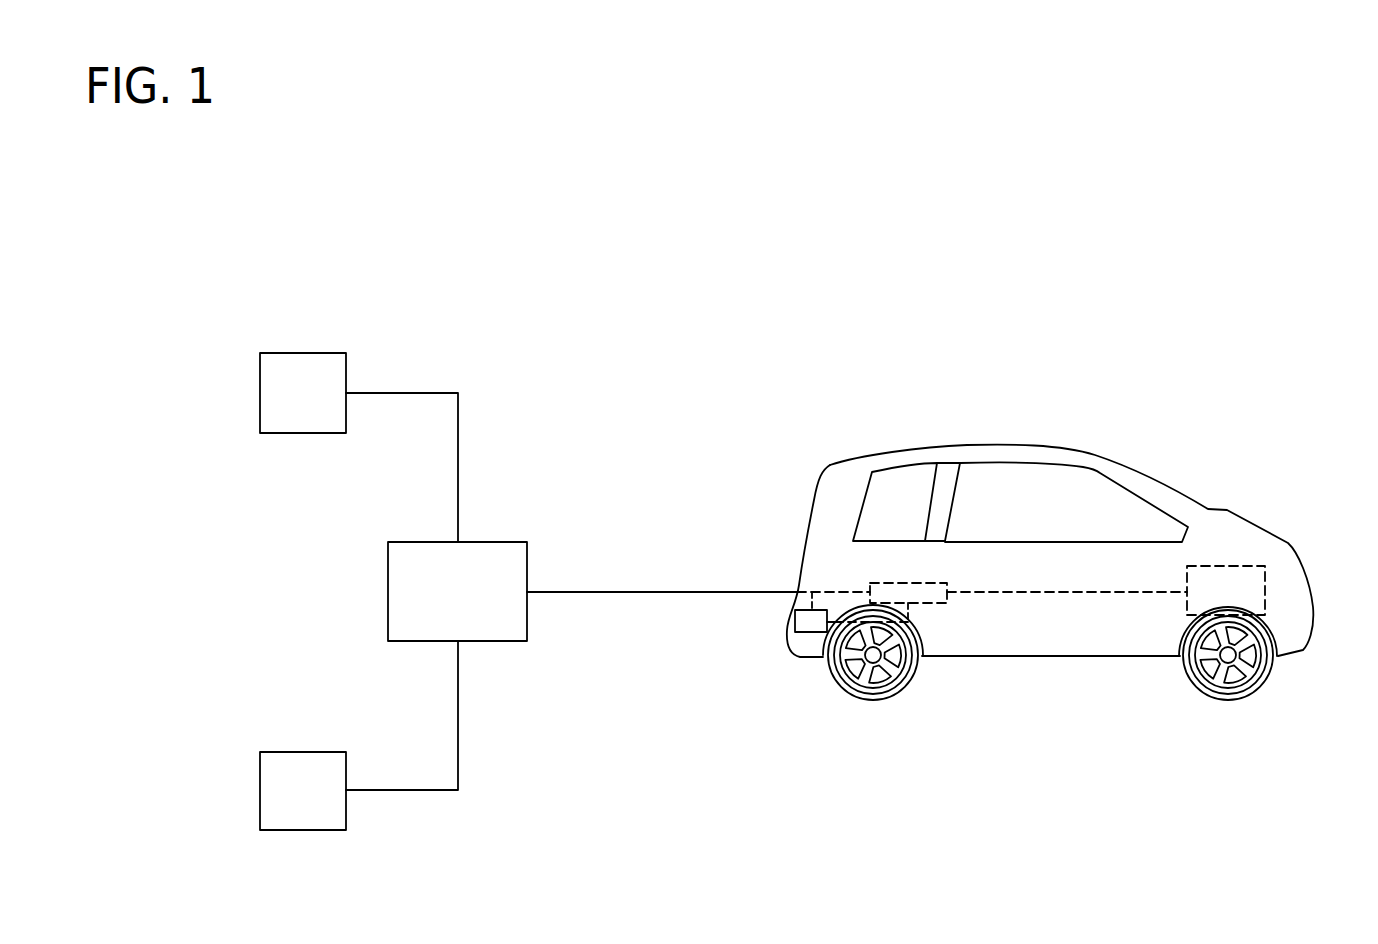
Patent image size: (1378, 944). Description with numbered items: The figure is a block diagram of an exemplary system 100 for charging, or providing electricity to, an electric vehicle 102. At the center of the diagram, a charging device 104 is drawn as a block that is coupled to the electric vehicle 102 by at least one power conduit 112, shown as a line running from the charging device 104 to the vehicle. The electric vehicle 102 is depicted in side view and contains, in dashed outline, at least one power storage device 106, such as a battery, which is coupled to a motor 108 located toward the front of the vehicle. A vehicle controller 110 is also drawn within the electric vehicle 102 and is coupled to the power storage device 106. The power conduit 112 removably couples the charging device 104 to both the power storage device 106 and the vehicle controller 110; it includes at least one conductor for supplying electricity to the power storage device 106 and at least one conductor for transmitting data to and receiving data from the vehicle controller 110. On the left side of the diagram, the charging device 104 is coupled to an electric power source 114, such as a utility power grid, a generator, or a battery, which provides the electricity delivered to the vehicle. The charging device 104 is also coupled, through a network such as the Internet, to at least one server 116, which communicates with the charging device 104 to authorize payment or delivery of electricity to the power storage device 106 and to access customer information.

The system 100 is at (822, 290).
The electric vehicle 102 is at (1045, 386).
The charging device 104 is at (495, 542).
The power storage device 106 is at (943, 603).
The motor 108 is at (1227, 566).
The vehicle controller 110 is at (803, 633).
The power conduit 112 is at (677, 592).
The electric power source 114 is at (318, 752).
The server 116 is at (323, 353).